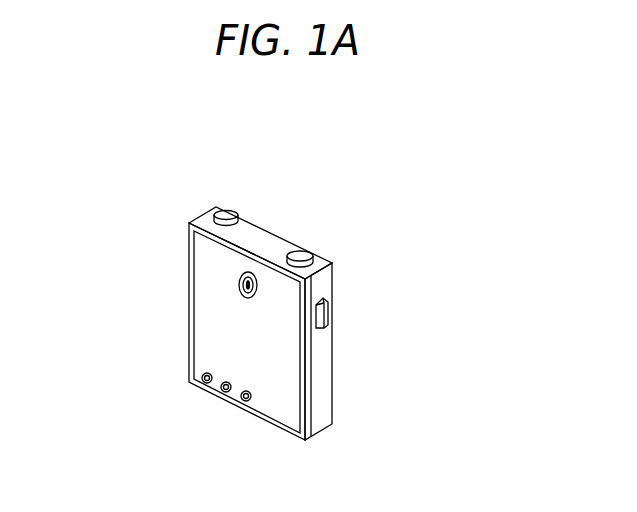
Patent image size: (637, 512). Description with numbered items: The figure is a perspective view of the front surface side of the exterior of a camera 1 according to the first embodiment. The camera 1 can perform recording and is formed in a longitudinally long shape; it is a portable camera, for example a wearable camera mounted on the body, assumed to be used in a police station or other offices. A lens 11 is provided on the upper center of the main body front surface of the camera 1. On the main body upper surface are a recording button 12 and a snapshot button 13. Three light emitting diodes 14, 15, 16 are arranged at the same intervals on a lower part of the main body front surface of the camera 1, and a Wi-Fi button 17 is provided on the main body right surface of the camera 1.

The camera 1 is at (342, 392).
The lens 11 is at (239, 285).
The recording button 12 is at (230, 214).
The snapshot button 13 is at (308, 254).
The light emitting diode 14 is at (201, 386).
The light emitting diode 15 is at (220, 393).
The light emitting diode 16 is at (247, 403).
The Wi-Fi button 17 is at (329, 316).